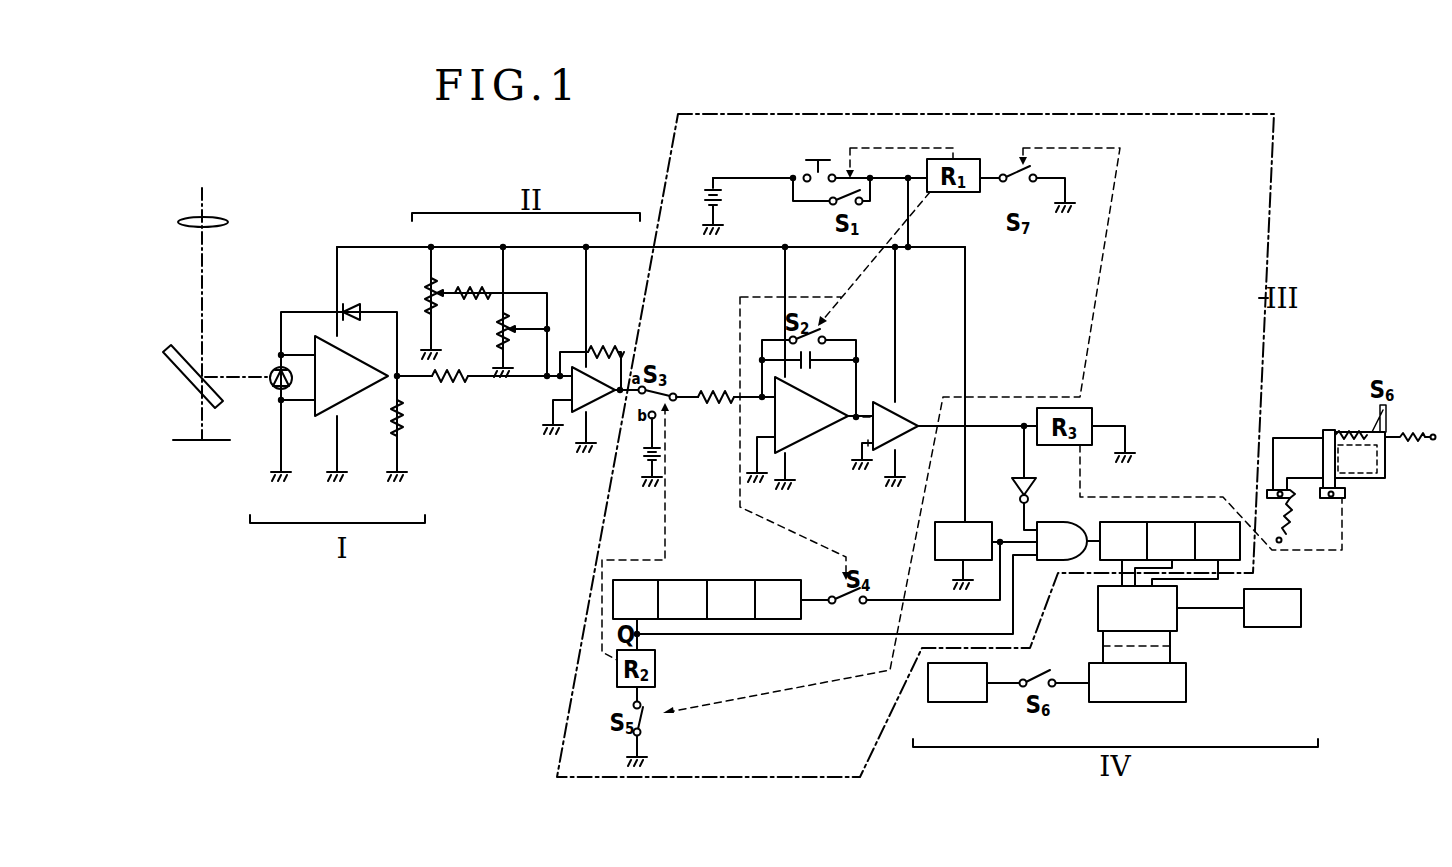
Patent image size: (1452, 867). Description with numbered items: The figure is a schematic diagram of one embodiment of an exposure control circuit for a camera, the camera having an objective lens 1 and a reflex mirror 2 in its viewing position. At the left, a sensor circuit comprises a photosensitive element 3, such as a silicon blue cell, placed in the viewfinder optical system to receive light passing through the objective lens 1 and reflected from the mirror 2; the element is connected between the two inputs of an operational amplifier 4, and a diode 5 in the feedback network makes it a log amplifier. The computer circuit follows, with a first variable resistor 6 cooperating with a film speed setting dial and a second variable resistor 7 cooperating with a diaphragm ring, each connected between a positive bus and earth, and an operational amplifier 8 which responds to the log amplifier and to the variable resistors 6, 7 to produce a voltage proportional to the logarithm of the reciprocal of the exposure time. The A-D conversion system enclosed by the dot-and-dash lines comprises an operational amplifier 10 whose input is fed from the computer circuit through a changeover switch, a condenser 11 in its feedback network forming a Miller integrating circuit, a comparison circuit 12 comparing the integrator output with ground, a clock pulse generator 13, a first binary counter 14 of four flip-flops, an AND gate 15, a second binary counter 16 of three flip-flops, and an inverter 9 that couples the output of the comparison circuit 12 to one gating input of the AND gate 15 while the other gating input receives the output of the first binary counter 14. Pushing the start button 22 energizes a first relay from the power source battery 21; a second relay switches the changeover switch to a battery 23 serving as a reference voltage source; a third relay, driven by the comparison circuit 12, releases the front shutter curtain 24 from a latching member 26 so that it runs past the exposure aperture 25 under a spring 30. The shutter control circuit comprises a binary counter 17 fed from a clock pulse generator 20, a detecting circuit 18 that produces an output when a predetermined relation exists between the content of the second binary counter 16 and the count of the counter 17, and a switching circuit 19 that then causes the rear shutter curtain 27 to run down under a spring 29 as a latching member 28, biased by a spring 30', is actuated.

The objective lens 1 is at (220, 222).
The reflex mirror 2 is at (200, 378).
The photosensitive element 3 is at (273, 388).
The operational amplifier 4 is at (351, 376).
The diode 5 is at (352, 303).
The first variable resistor 6 is at (432, 303).
The second variable resistor 7 is at (513, 312).
The operational amplifier 8 is at (593, 389).
The inverter 9 is at (1032, 478).
The operational amplifier 10 is at (811, 415).
The condenser 11 is at (809, 362).
The comparison circuit 12 is at (890, 426).
The clock pulse generator 13 is at (963, 418).
The first 4-bit binary counter 14 is at (715, 580).
The AND gate 15 is at (1068, 541).
The second 3-bit binary counter 16 is at (1165, 522).
The binary counter 17 is at (1137, 682).
The detecting circuit 18 is at (1137, 608).
The switching circuit 19 is at (1239, 608).
The clock pulse generator 20 is at (957, 682).
The power source battery 21 is at (727, 206).
The start button 22 is at (819, 155).
The battery 23 is at (638, 452).
The front shutter curtain 24 is at (1385, 478).
The exposure aperture 25 is at (1357, 460).
The front curtain latching member 26 is at (1340, 498).
The rear shutter curtain 27 is at (1298, 464).
The latching member 28 is at (1267, 494).
The spring 29 is at (1351, 421).
The spring 30 is at (1410, 451).
The spring 30' is at (1299, 520).